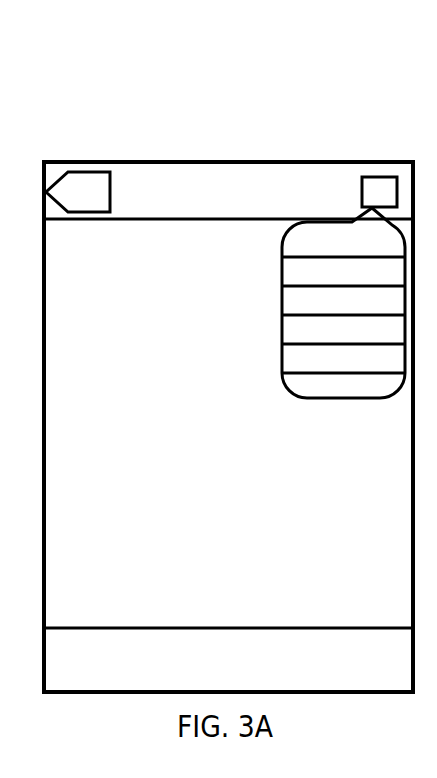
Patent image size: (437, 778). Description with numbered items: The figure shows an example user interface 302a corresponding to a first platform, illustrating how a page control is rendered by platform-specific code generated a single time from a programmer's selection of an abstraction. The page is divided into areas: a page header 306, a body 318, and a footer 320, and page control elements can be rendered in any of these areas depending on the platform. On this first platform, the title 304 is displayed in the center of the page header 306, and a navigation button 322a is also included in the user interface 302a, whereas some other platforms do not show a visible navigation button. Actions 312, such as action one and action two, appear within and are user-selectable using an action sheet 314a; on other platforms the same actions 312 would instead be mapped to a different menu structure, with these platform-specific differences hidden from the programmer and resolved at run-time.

The user interface 302a is at (152, 161).
The title 304 is at (263, 192).
The page header 306 is at (167, 196).
The actions 312 is at (273, 225).
The action sheet 314a is at (290, 393).
The body 318 is at (167, 532).
The footer 320 is at (167, 676).
The navigation button 322a is at (110, 211).